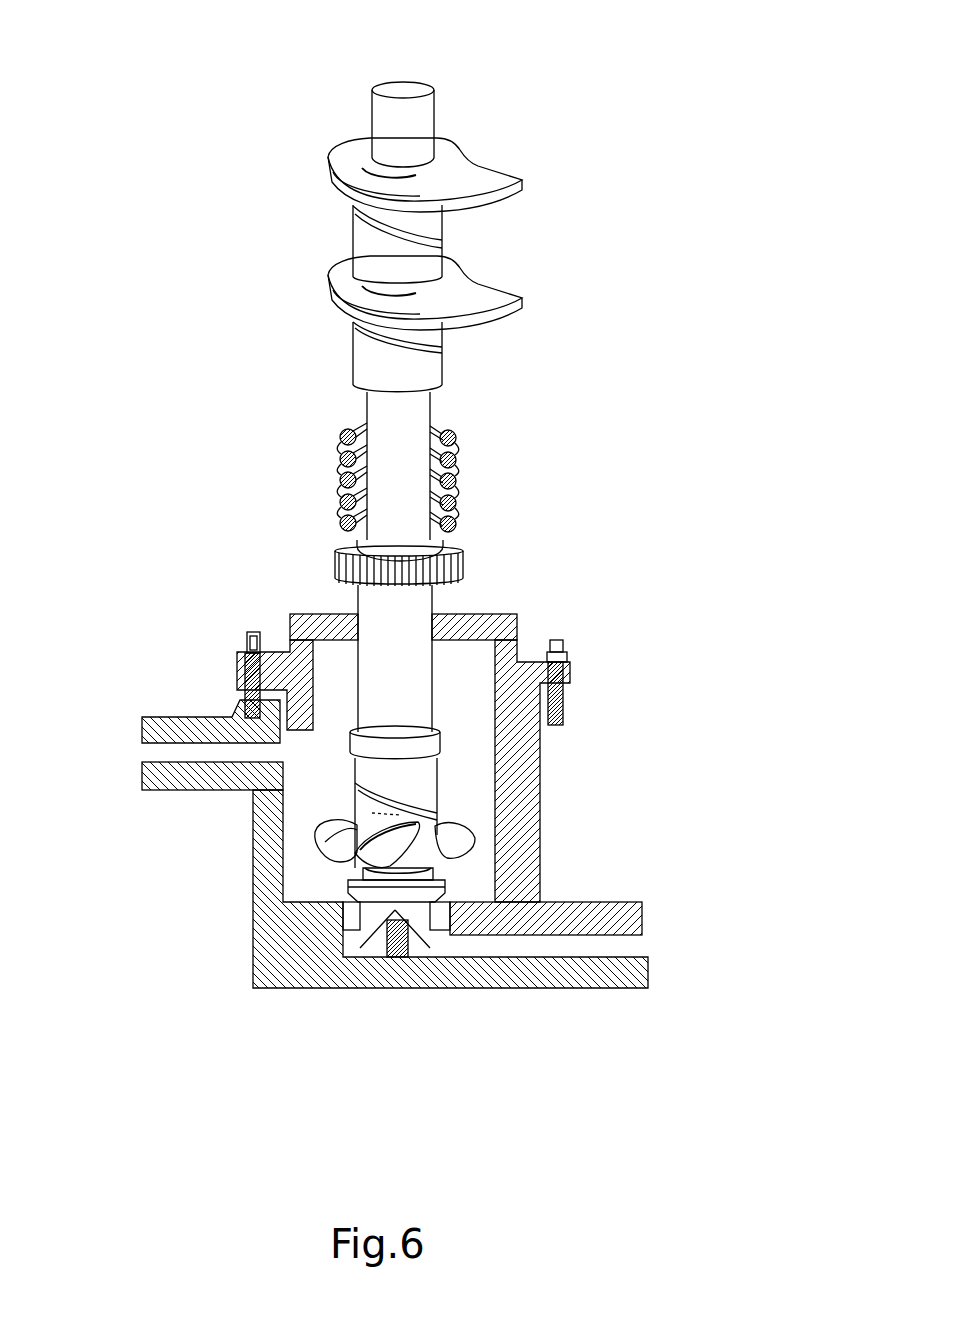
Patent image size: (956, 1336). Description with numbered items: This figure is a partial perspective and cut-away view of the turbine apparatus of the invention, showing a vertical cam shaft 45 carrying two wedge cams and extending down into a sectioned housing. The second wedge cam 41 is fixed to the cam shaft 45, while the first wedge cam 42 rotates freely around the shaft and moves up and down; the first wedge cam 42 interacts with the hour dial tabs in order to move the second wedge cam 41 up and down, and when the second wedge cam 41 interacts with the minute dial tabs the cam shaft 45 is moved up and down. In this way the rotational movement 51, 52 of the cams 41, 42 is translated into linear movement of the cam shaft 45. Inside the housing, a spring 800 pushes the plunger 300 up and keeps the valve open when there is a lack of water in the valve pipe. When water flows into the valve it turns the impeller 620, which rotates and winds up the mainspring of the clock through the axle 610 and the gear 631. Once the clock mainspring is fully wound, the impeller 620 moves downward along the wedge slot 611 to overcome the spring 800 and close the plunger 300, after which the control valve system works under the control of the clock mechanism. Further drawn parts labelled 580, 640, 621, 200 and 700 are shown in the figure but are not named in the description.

The cam shaft 45 is at (404, 88).
The second wedge cam 41 is at (348, 140).
The rotational movement 51 is at (330, 185).
The first wedge cam 42 is at (330, 282).
The rotational movement 52 is at (345, 316).
The spring 580 is at (457, 465).
The gear 631 is at (465, 578).
The axle 610 is at (410, 595).
The collar 640 is at (440, 742).
The impeller 620 is at (470, 836).
The wedge slot 611 is at (355, 782).
The impeller blade 621 is at (333, 825).
The plunger 300 is at (443, 923).
The spring 800 is at (390, 950).
The housing 200 is at (640, 988).
The shaft tip 700 is at (433, 947).